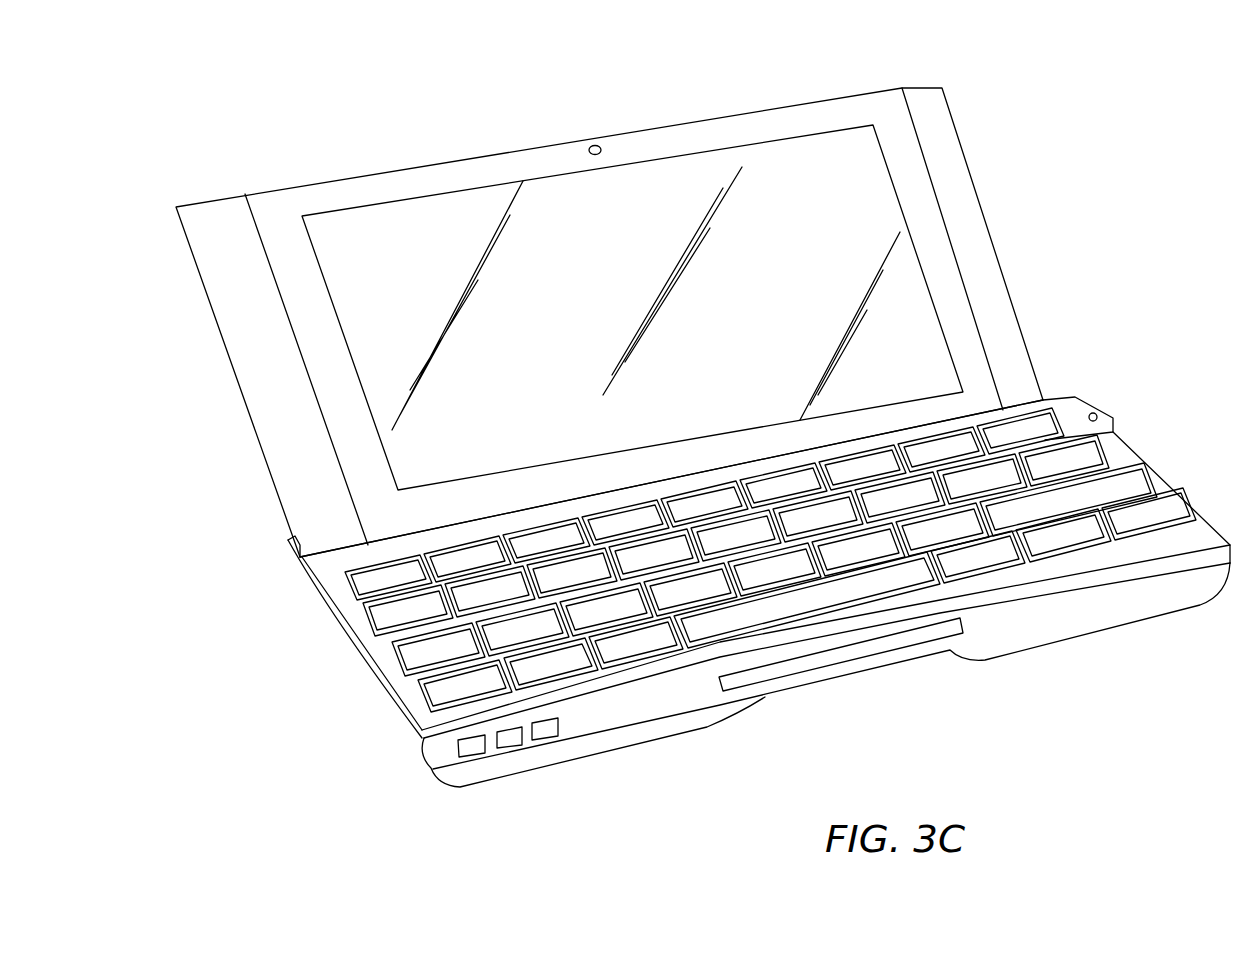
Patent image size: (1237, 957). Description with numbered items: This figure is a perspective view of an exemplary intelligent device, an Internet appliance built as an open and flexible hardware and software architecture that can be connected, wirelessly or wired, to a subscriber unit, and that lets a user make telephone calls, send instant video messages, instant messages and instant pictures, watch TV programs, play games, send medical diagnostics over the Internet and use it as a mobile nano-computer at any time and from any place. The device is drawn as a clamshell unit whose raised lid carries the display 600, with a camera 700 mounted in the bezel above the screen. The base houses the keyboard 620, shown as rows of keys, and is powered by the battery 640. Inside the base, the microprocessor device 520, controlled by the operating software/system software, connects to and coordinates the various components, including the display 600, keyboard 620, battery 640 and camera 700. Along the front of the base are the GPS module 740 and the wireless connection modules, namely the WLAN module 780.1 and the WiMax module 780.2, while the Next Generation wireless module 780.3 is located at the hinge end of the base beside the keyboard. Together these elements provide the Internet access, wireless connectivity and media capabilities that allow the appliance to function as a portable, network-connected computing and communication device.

The microprocessor device 520 is at (860, 648).
The display device 600 is at (867, 207).
The keyboard 620 is at (1072, 463).
The battery 640 is at (1100, 620).
The camera 700 is at (595, 145).
The GPS module 740 is at (547, 732).
The WLAN module 780.1 is at (472, 752).
The WiMax module 780.2 is at (508, 744).
The Next Generation wireless module 780.3 is at (1080, 408).